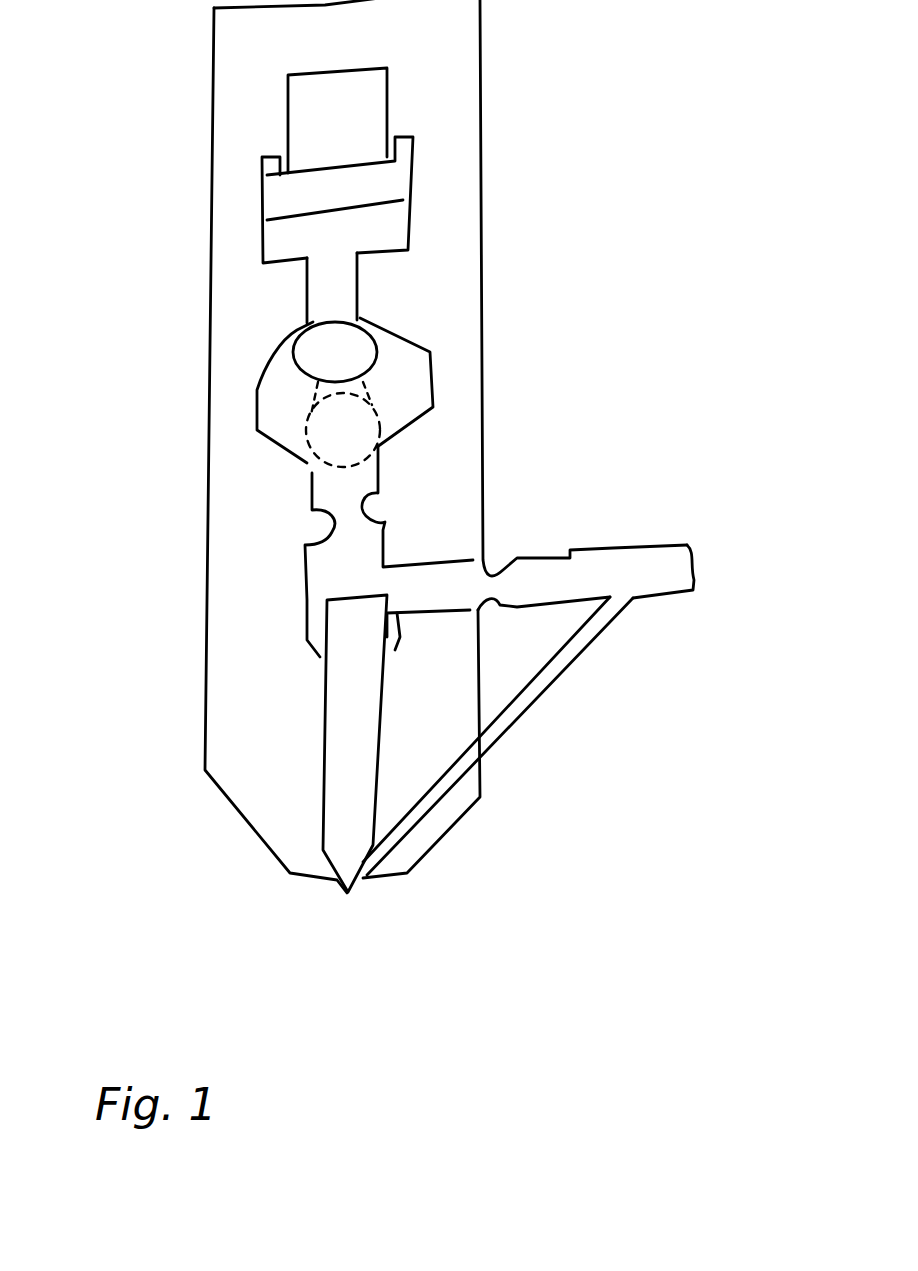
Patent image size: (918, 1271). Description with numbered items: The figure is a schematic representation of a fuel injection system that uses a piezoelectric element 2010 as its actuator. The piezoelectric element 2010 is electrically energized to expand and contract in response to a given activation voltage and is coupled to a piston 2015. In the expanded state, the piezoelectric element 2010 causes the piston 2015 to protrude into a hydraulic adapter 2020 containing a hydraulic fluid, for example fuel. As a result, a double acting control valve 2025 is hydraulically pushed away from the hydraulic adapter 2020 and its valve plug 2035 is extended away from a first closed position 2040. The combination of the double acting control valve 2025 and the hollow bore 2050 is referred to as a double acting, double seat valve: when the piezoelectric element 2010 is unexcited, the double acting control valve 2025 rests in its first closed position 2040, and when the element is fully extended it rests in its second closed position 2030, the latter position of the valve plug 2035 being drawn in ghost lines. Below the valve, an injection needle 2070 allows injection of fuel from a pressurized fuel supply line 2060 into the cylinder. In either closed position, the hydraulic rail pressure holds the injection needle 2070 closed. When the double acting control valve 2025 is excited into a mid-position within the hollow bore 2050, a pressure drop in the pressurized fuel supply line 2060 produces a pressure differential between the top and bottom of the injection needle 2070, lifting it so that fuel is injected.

The piezoelectric element 2010 is at (377, 97).
The piston 2015 is at (263, 198).
The hydraulic adapter 2020 is at (277, 241).
The double acting control valve 2025 is at (333, 297).
The second closed position 2030 is at (387, 447).
The valve plug 2035 is at (305, 460).
The first closed position 2040 is at (297, 327).
The hollow bore 2050 is at (433, 385).
The pressurized fuel supply line 2060 is at (643, 555).
The injection needle 2070 is at (353, 725).